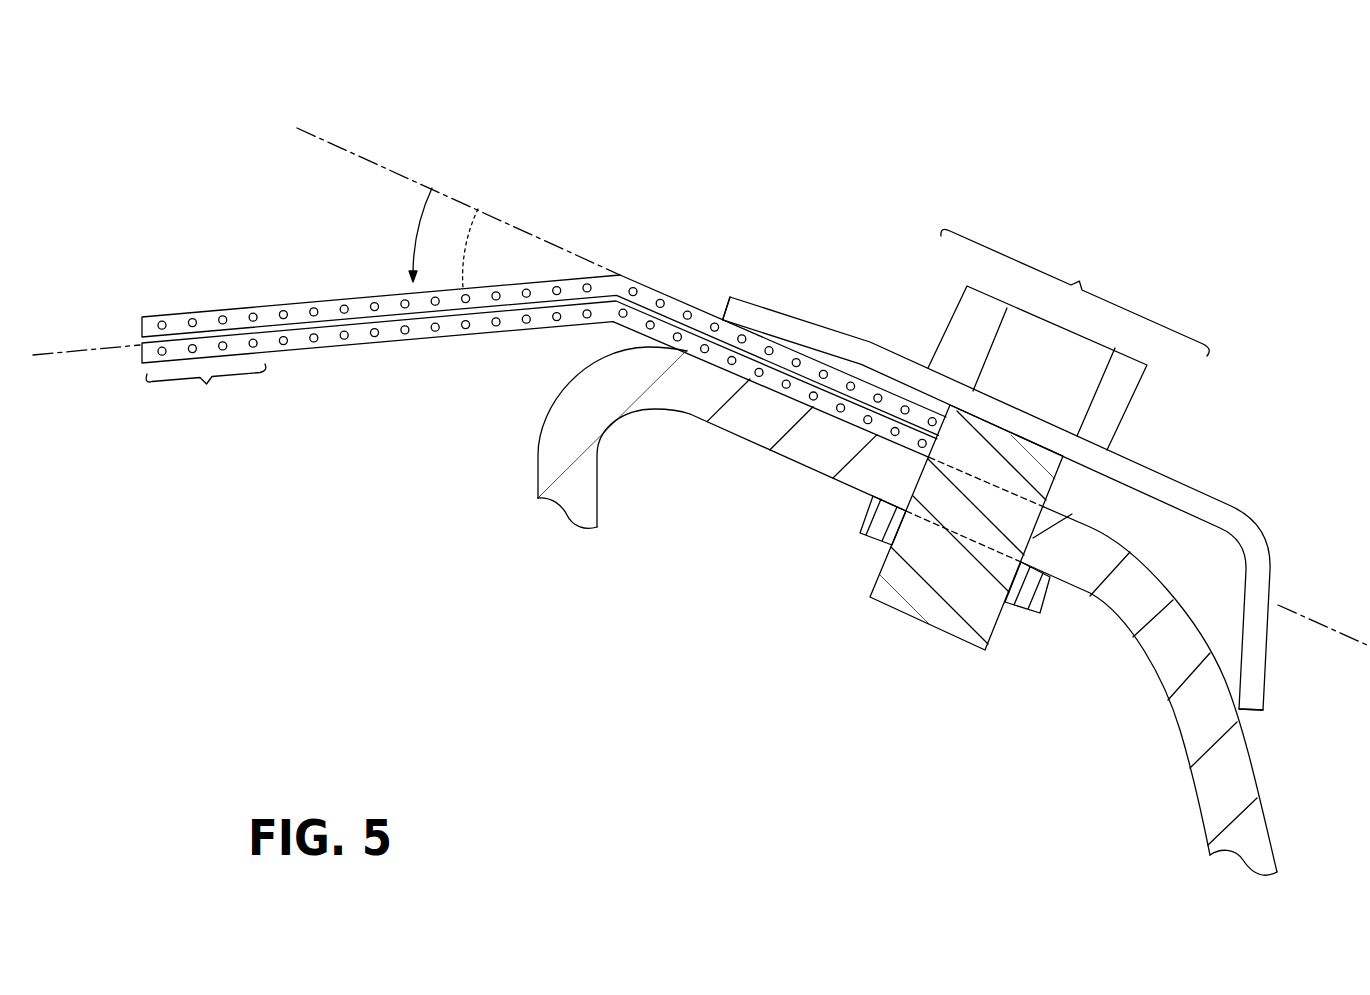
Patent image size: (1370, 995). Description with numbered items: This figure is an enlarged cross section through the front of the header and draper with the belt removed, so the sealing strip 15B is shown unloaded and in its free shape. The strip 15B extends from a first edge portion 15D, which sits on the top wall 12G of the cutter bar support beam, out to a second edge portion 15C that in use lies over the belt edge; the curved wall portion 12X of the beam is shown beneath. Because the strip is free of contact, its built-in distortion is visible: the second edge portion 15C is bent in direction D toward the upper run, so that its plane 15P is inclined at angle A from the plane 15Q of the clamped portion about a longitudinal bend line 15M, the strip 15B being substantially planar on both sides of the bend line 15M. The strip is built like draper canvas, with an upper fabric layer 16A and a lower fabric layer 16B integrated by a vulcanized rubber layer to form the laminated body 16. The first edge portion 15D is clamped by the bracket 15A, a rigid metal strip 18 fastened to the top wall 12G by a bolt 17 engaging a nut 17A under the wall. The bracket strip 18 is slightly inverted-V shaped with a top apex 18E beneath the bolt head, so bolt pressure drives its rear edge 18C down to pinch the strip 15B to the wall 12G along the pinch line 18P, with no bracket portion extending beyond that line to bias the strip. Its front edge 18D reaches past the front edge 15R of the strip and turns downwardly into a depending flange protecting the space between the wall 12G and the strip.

The top wall 12G is at (743, 425).
The curved flange portion 12X is at (620, 402).
The bracket 15A is at (1214, 496).
The strip 15B is at (348, 268).
The second edge portion 15C is at (206, 388).
The first edge portion 15D is at (1075, 292).
The bend line 15M is at (623, 277).
The plane of the second edge portion 15P is at (112, 350).
The plane of the first edge portion 15Q is at (1320, 620).
The front edge of the strip 15R is at (1180, 598).
The fastener 16 is at (544, 354).
The upper fabric layer 16A is at (252, 316).
The lower fabric layer 16B is at (280, 343).
The bolt 17 is at (997, 308).
The nut 17A is at (1025, 608).
The strip of metal 18 is at (1050, 437).
The rear edge of the bracket 18C is at (738, 302).
The front edge of the bracket 18D is at (1257, 697).
The top apex 18E is at (943, 388).
The pinch line 18P is at (797, 346).